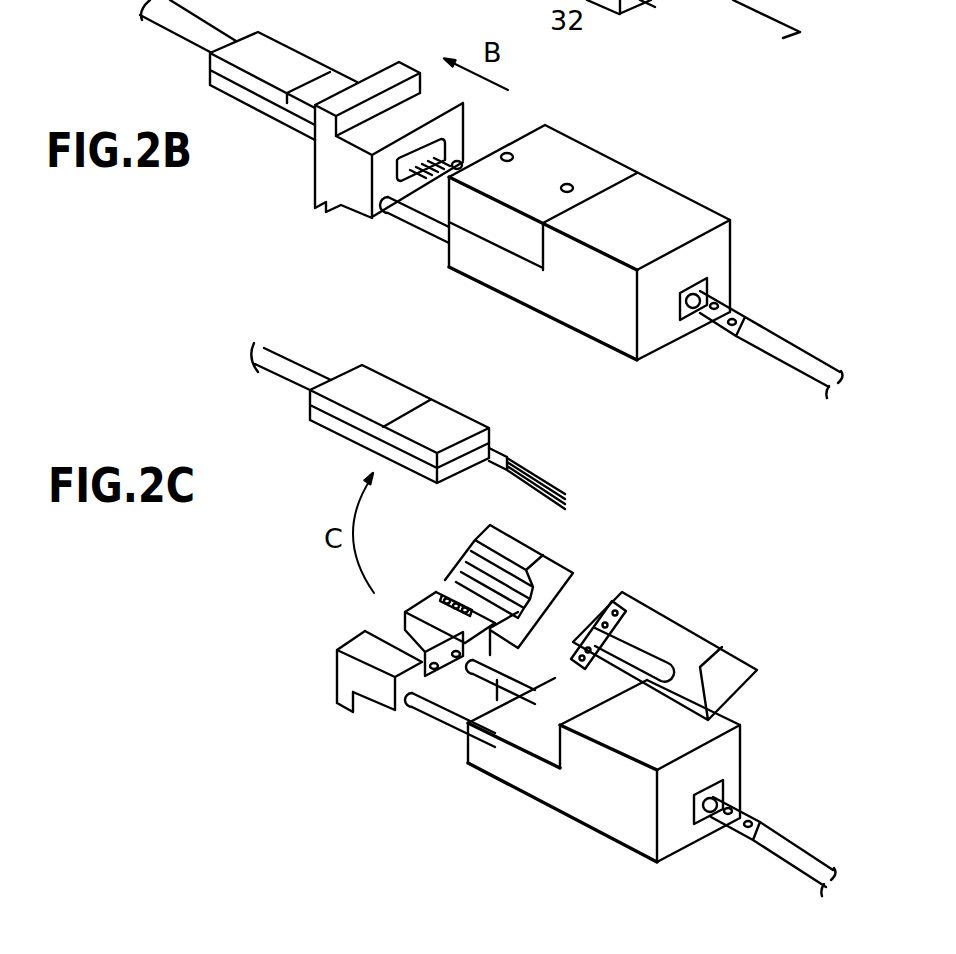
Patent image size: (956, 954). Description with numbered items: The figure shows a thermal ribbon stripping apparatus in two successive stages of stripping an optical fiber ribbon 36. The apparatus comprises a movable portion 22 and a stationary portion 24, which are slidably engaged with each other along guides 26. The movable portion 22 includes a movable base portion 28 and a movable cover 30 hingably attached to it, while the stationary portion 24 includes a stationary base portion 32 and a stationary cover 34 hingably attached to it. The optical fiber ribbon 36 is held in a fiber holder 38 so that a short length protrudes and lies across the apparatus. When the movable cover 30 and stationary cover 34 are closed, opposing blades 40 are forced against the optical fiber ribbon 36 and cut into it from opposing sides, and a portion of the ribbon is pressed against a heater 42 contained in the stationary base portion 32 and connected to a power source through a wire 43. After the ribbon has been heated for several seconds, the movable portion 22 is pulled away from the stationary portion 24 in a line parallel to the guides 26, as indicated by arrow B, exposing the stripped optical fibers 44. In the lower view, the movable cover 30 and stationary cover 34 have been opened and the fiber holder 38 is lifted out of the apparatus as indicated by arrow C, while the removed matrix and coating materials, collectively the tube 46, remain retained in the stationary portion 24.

In FIG. 2B, the movable portion 22 is at (266, 186).
In FIG. 2C, the movable portion 22 is at (371, 652).
In FIG. 2B, the stationary portion 24 is at (653, 253).
In FIG. 2C, the stationary portion 24 is at (646, 787).
In FIG. 2B, the guides 26 is at (418, 218).
In FIG. 2C, the guides 26 is at (437, 712).
In FIG. 2B, the movable base portion 28 is at (312, 183).
In FIG. 2C, the movable base portion 28 is at (348, 673).
In FIG. 2B, the movable cover 30 is at (325, 142).
In FIG. 2C, the movable cover 30 is at (525, 550).
In FIG. 2B, the stationary base portion 32 is at (543, 293).
In FIG. 2C, the stationary base portion 32 is at (573, 795).
In FIG. 2B, the stationary cover 34 is at (572, 152).
In FIG. 2B, the optical fiber ribbon 36 is at (203, 18).
In FIG. 2C, the optical fiber ribbon 36 is at (300, 364).
In FIG. 2B, the fiber holder 38 is at (302, 31).
In FIG. 2C, the fiber holder 38 is at (403, 377).
In FIG. 2C, the blades 40 is at (542, 645).
In FIG. 2C, the heater 42 is at (498, 745).
In FIG. 2B, the wire 43 is at (797, 357).
In FIG. 2C, the wire 43 is at (797, 843).
In FIG. 2B, the stripped optical fibers 44 is at (412, 183).
In FIG. 2C, the stripped optical fibers 44 is at (550, 488).
In FIG. 2C, the tube 46 is at (640, 660).